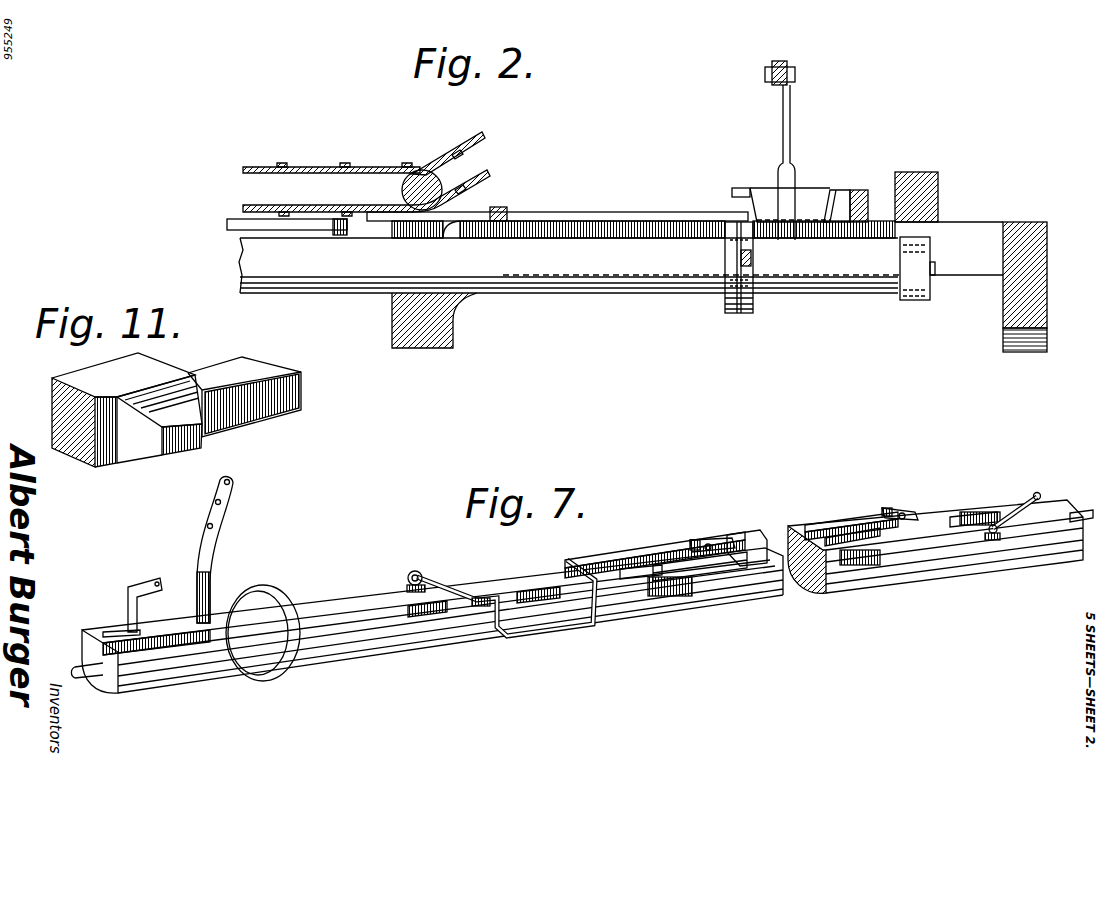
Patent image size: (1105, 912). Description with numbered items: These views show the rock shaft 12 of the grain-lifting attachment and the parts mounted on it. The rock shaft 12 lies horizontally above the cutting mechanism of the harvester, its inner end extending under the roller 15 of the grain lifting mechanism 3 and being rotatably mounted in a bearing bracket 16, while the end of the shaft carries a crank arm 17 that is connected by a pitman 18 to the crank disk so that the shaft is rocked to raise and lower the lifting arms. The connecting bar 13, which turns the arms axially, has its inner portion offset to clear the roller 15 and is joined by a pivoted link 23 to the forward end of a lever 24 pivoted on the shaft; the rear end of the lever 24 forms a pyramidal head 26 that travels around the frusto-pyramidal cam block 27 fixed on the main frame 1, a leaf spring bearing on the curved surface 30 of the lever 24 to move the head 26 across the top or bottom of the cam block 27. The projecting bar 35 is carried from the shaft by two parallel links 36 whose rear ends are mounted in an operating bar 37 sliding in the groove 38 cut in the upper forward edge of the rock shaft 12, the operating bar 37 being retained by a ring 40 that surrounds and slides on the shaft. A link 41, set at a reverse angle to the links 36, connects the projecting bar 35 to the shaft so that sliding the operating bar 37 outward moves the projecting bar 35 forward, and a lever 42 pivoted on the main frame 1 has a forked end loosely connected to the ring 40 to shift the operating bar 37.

In FIG. 2, the main frame 1 is at (972, 230).
In FIG. 2, the grain lifting mechanism 3 is at (315, 168).
In FIG. 2, the rock shaft 12 is at (623, 279).
In FIG. 7, the rock shaft 12 is at (452, 640).
In FIG. 2, the connecting bar 13 is at (243, 220).
In FIG. 7, the connecting bar 13 is at (638, 550).
In FIG. 2, the roller 15 is at (427, 173).
In FIG. 2, the bearing bracket 16 is at (932, 296).
In FIG. 2, the crank arm 17 is at (790, 110).
In FIG. 7, the crank arm 17 is at (210, 545).
In FIG. 2, the pitman 18 is at (773, 58).
In FIG. 2, the link 23 is at (613, 212).
In FIG. 2, the lever 24 is at (768, 187).
In FIG. 2, the head 26 is at (866, 193).
In FIG. 11, the cam block 27 is at (152, 453).
In FIG. 2, the curved surface 30 is at (810, 200).
In FIG. 7, the projecting bar 35 is at (723, 578).
In FIG. 7, the parallel links 36 is at (640, 580).
In FIG. 7, the operating bar 37 is at (575, 587).
In FIG. 7, the guide groove 38 is at (225, 642).
In FIG. 2, the ring 40 is at (732, 263).
In FIG. 7, the ring 40 is at (287, 603).
In FIG. 7, the link 41 is at (1028, 493).
In FIG. 2, the lever 42 is at (775, 305).